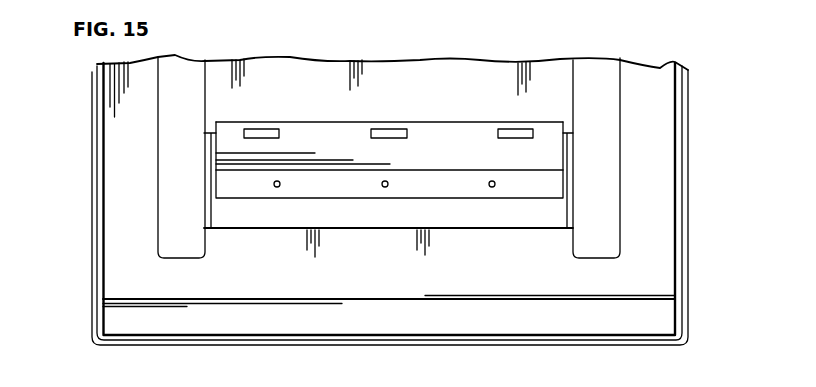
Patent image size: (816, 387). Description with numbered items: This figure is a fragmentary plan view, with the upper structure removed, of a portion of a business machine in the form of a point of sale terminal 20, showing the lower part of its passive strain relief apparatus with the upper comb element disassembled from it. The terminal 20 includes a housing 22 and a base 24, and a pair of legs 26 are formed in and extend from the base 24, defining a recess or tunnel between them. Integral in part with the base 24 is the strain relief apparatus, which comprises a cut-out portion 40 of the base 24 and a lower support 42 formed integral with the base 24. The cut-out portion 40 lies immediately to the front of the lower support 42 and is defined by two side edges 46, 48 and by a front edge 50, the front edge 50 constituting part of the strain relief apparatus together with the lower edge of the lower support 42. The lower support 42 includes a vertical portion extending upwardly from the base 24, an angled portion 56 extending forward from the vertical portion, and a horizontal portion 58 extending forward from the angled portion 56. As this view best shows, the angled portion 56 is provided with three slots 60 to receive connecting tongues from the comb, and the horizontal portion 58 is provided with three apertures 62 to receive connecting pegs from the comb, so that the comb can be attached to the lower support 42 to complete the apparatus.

The point of sale terminal 20 is at (76, 216).
The housing 22 is at (688, 328).
The base 24 is at (475, 72).
The legs 26 is at (194, 104).
The cut-out portion 40 is at (378, 218).
The lower support 42 is at (245, 121).
The side edge 46 is at (212, 216).
The side edge 48 is at (567, 216).
The front edge 50 is at (487, 218).
The angled portion 56 is at (437, 122).
The horizontal portion 58 is at (445, 182).
The slots 60 is at (385, 128).
The apertures 62 is at (382, 187).